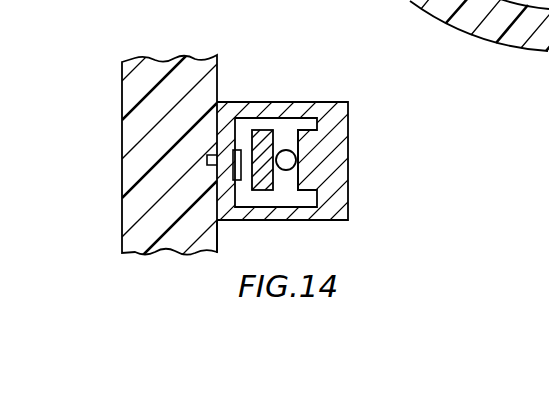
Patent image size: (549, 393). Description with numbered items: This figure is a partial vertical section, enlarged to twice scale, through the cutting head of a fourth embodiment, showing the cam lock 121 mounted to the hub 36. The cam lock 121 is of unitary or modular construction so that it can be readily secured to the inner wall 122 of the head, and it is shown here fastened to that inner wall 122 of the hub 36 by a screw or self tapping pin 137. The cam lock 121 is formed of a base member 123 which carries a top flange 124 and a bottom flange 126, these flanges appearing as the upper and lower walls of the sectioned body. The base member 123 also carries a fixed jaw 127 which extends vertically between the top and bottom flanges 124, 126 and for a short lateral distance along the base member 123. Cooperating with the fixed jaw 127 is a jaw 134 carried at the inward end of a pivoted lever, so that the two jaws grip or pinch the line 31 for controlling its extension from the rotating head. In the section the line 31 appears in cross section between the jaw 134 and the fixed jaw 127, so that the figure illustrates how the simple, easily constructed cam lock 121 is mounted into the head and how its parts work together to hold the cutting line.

The line 31 is at (287, 160).
The hub 36 is at (122, 98).
The cam lock 121 is at (360, 131).
The inner wall 122 is at (221, 243).
The base member 123 is at (254, 213).
The top flange 124 is at (286, 103).
The bottom flange 126 is at (325, 221).
The fixed jaw 127 is at (306, 131).
The jaw 134 is at (262, 148).
The screw or self tapping pin 137 is at (236, 150).